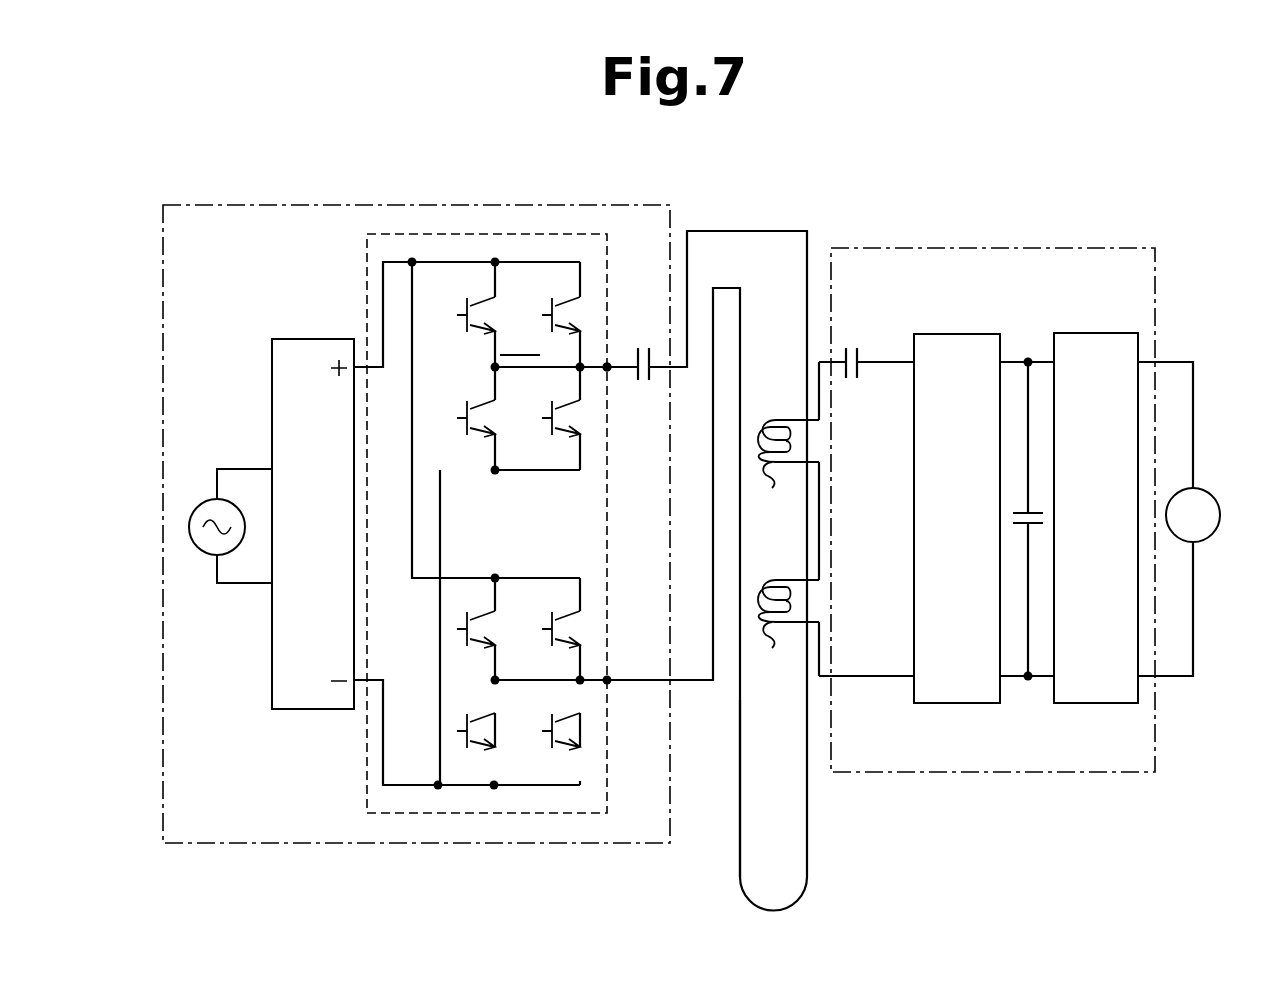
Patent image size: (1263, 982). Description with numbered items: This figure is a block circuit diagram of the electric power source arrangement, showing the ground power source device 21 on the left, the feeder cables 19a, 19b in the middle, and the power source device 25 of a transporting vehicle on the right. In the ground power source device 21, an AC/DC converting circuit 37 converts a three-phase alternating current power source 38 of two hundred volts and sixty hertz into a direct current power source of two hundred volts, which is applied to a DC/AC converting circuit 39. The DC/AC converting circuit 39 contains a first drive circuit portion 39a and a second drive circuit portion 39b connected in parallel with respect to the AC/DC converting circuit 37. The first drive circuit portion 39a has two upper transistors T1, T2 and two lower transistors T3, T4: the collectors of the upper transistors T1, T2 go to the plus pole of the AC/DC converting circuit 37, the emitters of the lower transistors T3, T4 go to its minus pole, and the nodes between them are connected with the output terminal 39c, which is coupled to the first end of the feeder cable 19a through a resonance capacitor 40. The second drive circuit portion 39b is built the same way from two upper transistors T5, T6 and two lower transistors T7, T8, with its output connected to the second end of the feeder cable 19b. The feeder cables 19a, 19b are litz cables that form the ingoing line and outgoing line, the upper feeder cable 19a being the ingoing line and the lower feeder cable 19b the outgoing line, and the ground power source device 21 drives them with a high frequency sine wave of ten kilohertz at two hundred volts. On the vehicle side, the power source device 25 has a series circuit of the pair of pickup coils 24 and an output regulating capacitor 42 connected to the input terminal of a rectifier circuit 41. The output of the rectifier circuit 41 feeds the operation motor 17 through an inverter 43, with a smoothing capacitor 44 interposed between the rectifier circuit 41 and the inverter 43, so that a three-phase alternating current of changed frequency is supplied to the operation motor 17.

The operation motor 17 is at (1212, 496).
The feeder cable 19a is at (806, 845).
The feeder cable 19b is at (739, 845).
The power source device 21 is at (578, 205).
The pickup coil 24 is at (786, 520).
The power source device 25 is at (1018, 246).
The AC/DC converting circuit 37 is at (315, 709).
The three-phase alternating current power source 38 is at (210, 503).
The DC/AC converting circuit 39 is at (455, 533).
The first drive circuit portion 39a is at (518, 482).
The second drive circuit portion 39b is at (517, 566).
The output terminal 39c is at (607, 367).
The resonance capacitor 40 is at (640, 349).
The rectifier circuit 41 is at (950, 705).
The output regulating capacitor 42 is at (862, 352).
The inverter 43 is at (1090, 705).
The smoothing capacitor 44 is at (1036, 525).
The upper transistor T1 is at (478, 297).
The upper transistor T2 is at (562, 297).
The lower transistor T3 is at (478, 404).
The lower transistor T4 is at (562, 404).
The upper transistor T5 is at (490, 614).
The upper transistor T6 is at (562, 611).
The lower transistor T7 is at (488, 718).
The lower transistor T8 is at (562, 715).